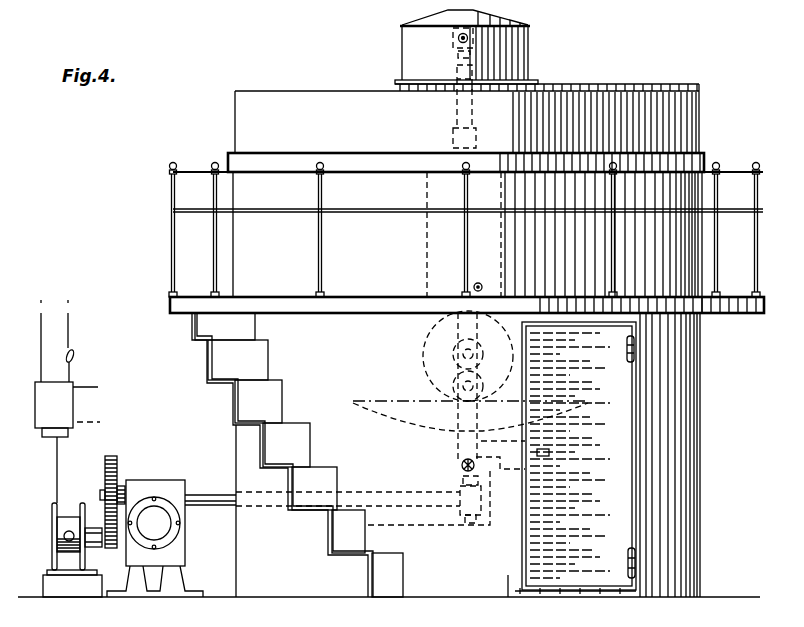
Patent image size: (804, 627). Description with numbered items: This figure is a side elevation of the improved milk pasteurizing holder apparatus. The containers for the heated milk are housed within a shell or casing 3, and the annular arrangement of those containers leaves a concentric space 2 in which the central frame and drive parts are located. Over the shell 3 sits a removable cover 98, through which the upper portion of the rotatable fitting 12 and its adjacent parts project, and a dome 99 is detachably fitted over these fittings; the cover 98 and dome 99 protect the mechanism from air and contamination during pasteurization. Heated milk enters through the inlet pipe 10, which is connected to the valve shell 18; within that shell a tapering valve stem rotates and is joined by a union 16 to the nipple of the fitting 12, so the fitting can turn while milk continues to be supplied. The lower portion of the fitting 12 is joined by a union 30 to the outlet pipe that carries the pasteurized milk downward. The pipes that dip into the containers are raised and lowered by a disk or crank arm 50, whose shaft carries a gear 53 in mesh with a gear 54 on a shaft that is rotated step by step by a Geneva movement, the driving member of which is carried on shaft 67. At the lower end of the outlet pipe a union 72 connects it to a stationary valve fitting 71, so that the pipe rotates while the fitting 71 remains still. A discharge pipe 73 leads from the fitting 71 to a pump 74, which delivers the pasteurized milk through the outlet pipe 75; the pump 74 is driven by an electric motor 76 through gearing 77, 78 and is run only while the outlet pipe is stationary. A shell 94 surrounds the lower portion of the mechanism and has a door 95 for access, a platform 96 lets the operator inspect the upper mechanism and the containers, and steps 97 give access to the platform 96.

The space 2 is at (425, 266).
The shell or casing 3 is at (466, 238).
The inlet pipe 10 is at (468, 40).
The fitting 12 is at (455, 112).
The union 16 is at (475, 57).
The valve shell 18 is at (452, 44).
The union 30 is at (474, 138).
The disk or crank arm 50 is at (423, 344).
The gear 53 is at (490, 337).
The gear 54 is at (485, 375).
The shaft 67 is at (463, 462).
The valve mechanism or fitting 71 is at (465, 505).
The union 72 is at (463, 481).
The discharge pipe 73 is at (220, 502).
The pump 74 is at (152, 483).
The outlet pipe 75 is at (120, 493).
The electric motor 76 is at (53, 555).
The gearing 77 is at (113, 546).
The gearing 78 is at (105, 470).
The shell 94 is at (683, 446).
The door 95 is at (575, 458).
The platform 96 is at (742, 312).
The steps 97 is at (273, 401).
The removable cover 98 is at (242, 115).
The dome 99 is at (410, 50).